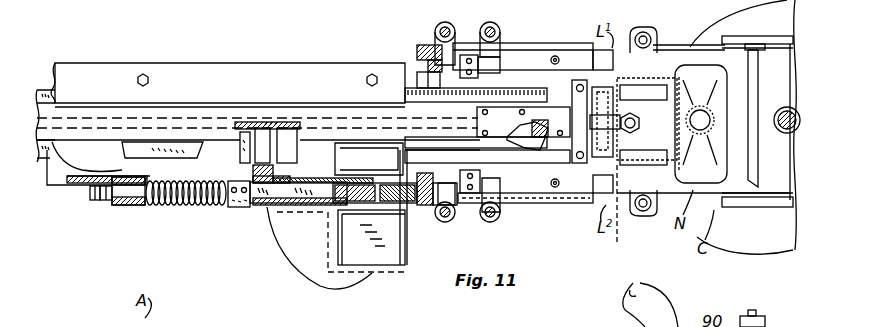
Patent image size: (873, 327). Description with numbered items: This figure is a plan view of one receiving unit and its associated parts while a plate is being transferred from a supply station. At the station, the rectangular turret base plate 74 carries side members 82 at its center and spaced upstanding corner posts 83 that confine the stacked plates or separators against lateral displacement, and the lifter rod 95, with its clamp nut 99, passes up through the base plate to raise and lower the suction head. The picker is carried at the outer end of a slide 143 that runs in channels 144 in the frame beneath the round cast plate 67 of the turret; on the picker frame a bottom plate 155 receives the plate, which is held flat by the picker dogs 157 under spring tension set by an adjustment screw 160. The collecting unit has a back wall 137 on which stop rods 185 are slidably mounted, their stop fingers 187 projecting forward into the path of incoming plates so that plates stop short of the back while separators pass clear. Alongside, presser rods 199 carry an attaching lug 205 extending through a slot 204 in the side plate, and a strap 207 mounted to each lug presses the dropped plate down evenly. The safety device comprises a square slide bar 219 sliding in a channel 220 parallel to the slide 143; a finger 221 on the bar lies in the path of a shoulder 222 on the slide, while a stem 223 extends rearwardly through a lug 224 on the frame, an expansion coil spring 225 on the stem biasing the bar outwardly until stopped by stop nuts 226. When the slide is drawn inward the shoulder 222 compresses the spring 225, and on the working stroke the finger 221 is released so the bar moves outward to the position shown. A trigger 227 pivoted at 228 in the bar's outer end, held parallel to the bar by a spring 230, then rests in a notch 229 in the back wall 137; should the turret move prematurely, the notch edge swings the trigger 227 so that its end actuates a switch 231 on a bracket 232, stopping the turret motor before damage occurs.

The slide 143 is at (40, 122).
The channels 144 is at (48, 148).
The finger 221 is at (215, 143).
The channel 220 is at (283, 160).
The stop rods 185 is at (436, 35).
The stop fingers 187 is at (420, 50).
The presser rods 199 is at (497, 33).
The strap 207 is at (528, 60).
The corner posts 83 is at (651, 38).
The side members 82 is at (781, 38).
The picker dog 157 is at (654, 90).
The lifter rod 95 is at (785, 105).
The pivot 228 is at (410, 158).
The shoulder 222 is at (538, 125).
The adjustment screw 160 is at (640, 125).
The stem 223 is at (93, 192).
The stop nuts 226 is at (110, 200).
The lug 224 is at (130, 207).
The expansion coil spring 225 is at (192, 206).
The slide bar 219 is at (265, 198).
The spring 230 is at (290, 178).
The trigger 227 is at (400, 172).
The attaching lug 205 is at (487, 166).
The switch 231 is at (341, 241).
The bracket 232 is at (303, 273).
The notch 229 is at (428, 205).
The back wall 137 is at (432, 210).
The slot 204 is at (512, 208).
The bottom plate 155 is at (621, 213).
The turret base plate 74 is at (680, 207).
The clamp nut 99 is at (762, 318).
The cast plate 67 is at (235, 319).